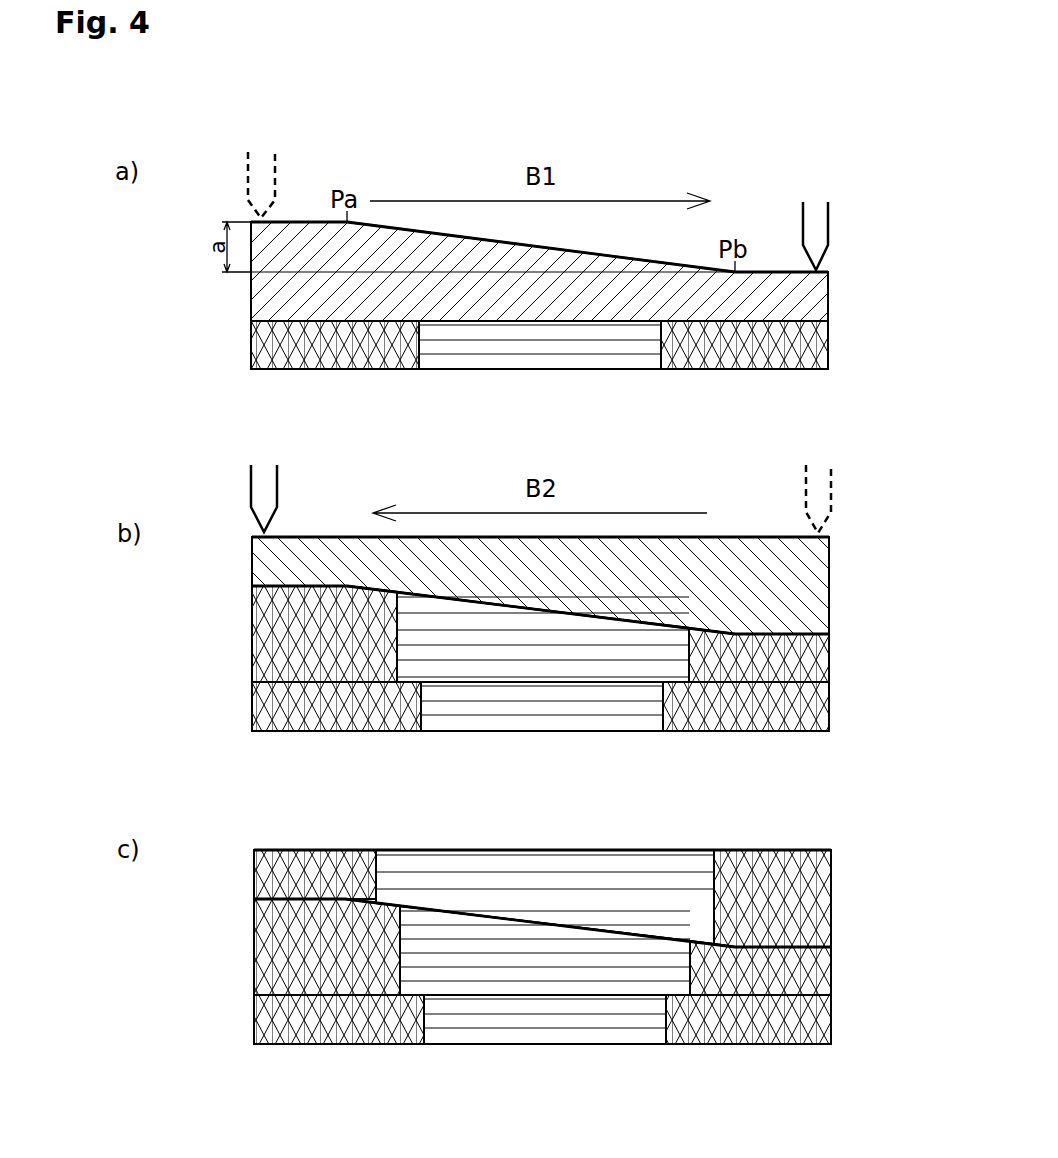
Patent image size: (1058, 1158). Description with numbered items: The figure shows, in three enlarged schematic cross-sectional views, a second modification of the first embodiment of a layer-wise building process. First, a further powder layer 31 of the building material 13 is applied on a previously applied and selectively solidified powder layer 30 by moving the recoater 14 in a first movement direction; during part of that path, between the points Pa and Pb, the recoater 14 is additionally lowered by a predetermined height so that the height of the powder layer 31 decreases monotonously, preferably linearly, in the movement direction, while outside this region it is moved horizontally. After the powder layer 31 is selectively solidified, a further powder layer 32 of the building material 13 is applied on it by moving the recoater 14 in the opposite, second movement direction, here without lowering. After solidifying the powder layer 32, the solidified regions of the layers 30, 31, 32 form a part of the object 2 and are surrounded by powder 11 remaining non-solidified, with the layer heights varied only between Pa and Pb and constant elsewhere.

The object 2 is at (525, 332).
The powder remaining non-solidified 11 is at (308, 332).
The building material 13 is at (599, 428).
The recoater 14 is at (820, 226).
The powder layer 30 is at (588, 713).
The powder layer 31 is at (815, 293).
The powder layer 32 is at (803, 587).